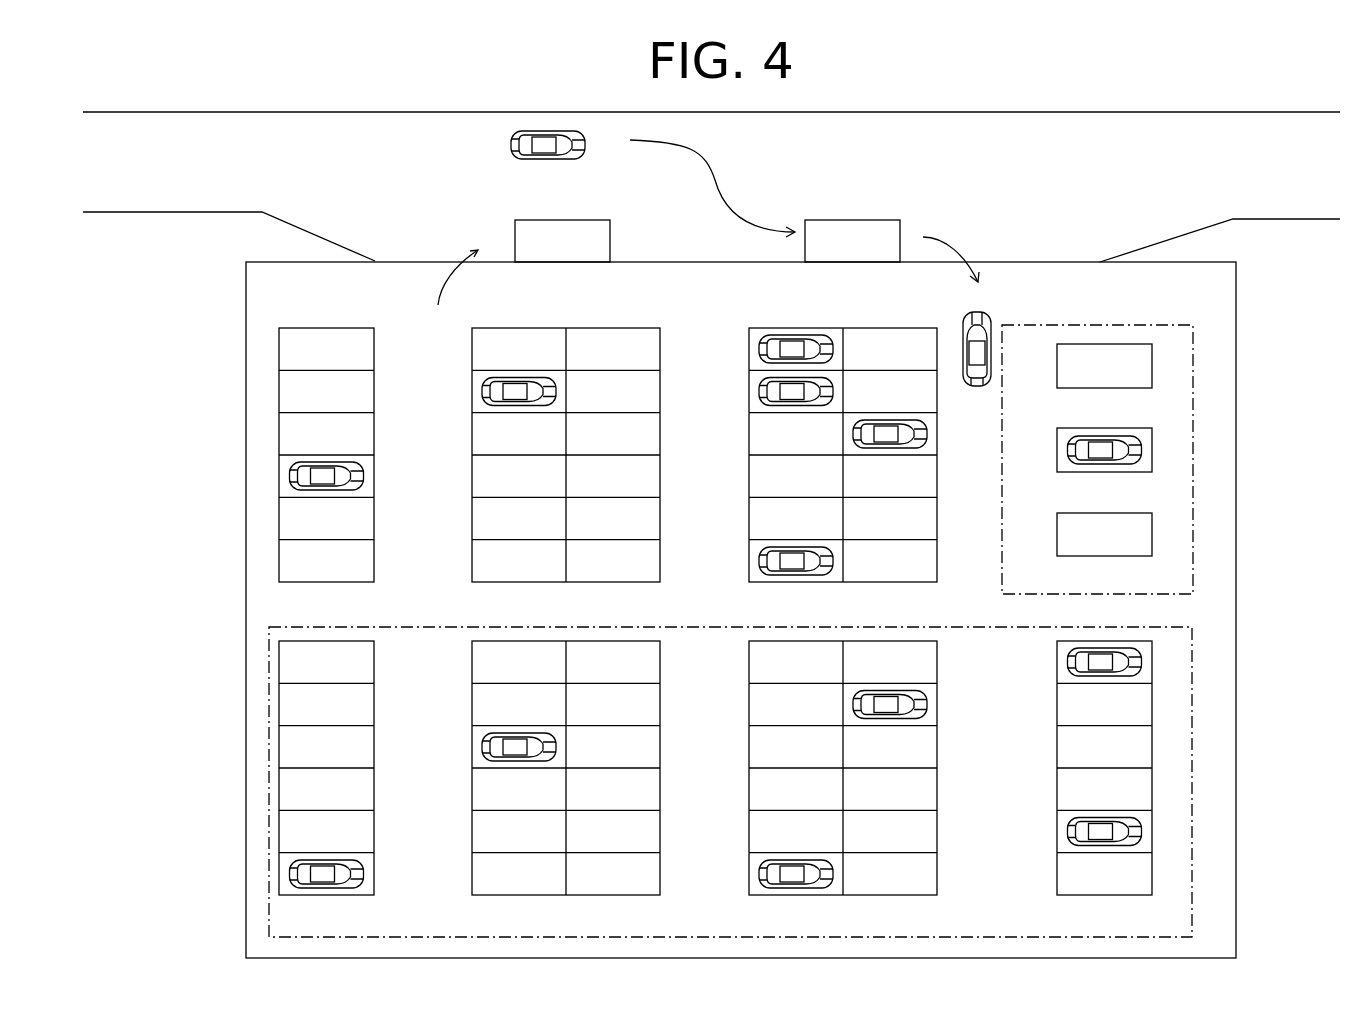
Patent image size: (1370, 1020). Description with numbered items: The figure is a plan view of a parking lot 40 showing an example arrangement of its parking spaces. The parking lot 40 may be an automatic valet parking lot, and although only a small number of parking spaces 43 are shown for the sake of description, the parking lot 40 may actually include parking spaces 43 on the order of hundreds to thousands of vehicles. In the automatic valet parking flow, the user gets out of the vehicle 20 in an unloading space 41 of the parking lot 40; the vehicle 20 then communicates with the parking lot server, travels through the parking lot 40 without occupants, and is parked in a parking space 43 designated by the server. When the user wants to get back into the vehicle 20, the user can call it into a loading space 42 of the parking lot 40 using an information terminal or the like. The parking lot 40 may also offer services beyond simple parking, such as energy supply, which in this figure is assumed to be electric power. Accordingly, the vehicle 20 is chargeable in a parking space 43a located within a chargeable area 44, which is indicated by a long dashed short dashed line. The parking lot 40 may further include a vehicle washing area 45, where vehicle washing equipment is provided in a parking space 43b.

The vehicle 20 is at (548, 130).
The parking lot 40 is at (1237, 410).
The unloading space 41 is at (850, 220).
The loading space 42 is at (565, 220).
The parking space 43 is at (279, 345).
The parking space 43a is at (289, 703).
The parking space 43b is at (1152, 535).
The chargeable area 44 is at (1192, 700).
The vehicle washing area 45 is at (1193, 368).